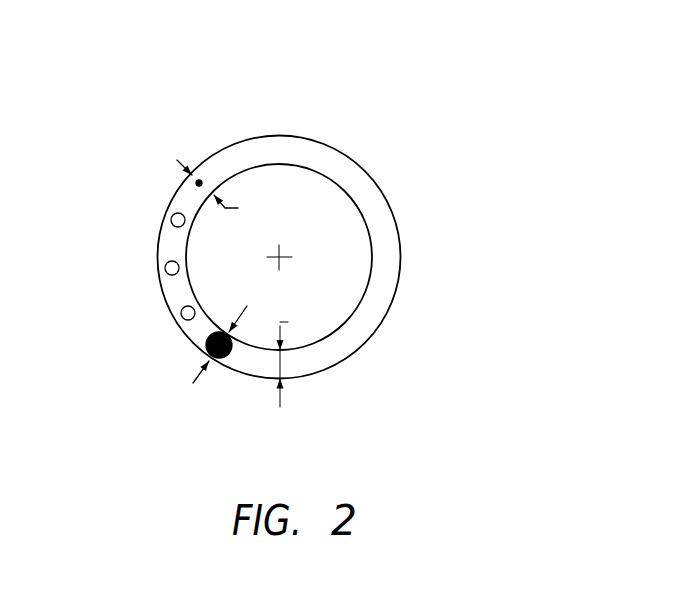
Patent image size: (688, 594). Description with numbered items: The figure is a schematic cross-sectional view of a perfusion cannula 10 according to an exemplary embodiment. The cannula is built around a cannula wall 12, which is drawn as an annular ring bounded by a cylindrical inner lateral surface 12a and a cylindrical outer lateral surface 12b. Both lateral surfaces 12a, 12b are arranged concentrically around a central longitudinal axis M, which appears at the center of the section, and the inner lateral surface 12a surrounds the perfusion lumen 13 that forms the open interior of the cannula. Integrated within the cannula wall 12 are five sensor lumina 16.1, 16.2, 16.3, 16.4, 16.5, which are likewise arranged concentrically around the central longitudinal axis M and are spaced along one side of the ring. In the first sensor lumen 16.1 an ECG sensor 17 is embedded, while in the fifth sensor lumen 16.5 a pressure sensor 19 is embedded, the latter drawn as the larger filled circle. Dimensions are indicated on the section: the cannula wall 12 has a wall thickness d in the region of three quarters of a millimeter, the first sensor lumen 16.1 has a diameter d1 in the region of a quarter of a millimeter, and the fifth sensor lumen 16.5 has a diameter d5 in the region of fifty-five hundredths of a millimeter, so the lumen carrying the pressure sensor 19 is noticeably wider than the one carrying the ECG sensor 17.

The perfusion cannula 10 is at (482, 143).
The cannula wall 12 is at (318, 163).
The cylindrical inner lateral surface 12a is at (365, 217).
The cylindrical outer lateral surface 12b is at (373, 177).
The perfusion lumen 13 is at (357, 298).
The first sensor lumen 16.1 is at (215, 160).
The second sensor lumen 16.2 is at (171, 220).
The third sensor lumen 16.3 is at (165, 268).
The fourth sensor lumen 16.4 is at (181, 313).
The fifth sensor lumen 16.5 is at (177, 373).
The ECG sensor 17 is at (199, 183).
The pressure sensor 19 is at (228, 358).
The diameter of first sensor lumen d1 is at (222, 189).
The diameter of fifth sensor lumen d5 is at (227, 333).
The wall thickness d is at (291, 357).
The central longitudinal axis M is at (285, 262).